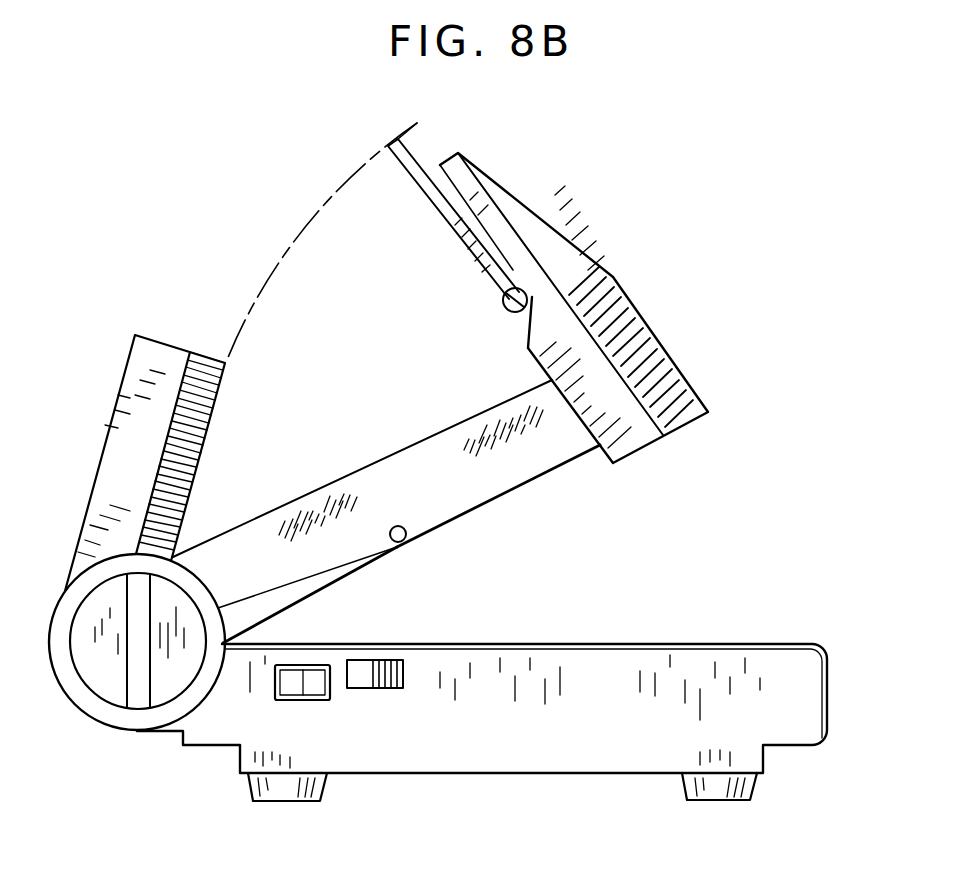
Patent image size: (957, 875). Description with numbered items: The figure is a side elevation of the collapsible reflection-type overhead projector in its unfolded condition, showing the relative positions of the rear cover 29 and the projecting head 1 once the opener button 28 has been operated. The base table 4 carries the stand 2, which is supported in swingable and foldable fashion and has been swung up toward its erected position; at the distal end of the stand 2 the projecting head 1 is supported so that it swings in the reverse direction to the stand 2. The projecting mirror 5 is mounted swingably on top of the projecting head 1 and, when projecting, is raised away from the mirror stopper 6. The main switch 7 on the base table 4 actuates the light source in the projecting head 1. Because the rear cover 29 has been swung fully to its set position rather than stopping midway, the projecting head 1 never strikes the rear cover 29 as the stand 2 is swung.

The projecting head 1 is at (618, 272).
The stand 2 is at (360, 473).
The base table 4 is at (558, 634).
The projecting mirror 5 is at (458, 237).
The mirror stopper 6 is at (399, 543).
The main switch 7 is at (317, 687).
The opener button 28 is at (405, 677).
The rear cover 29 is at (164, 358).